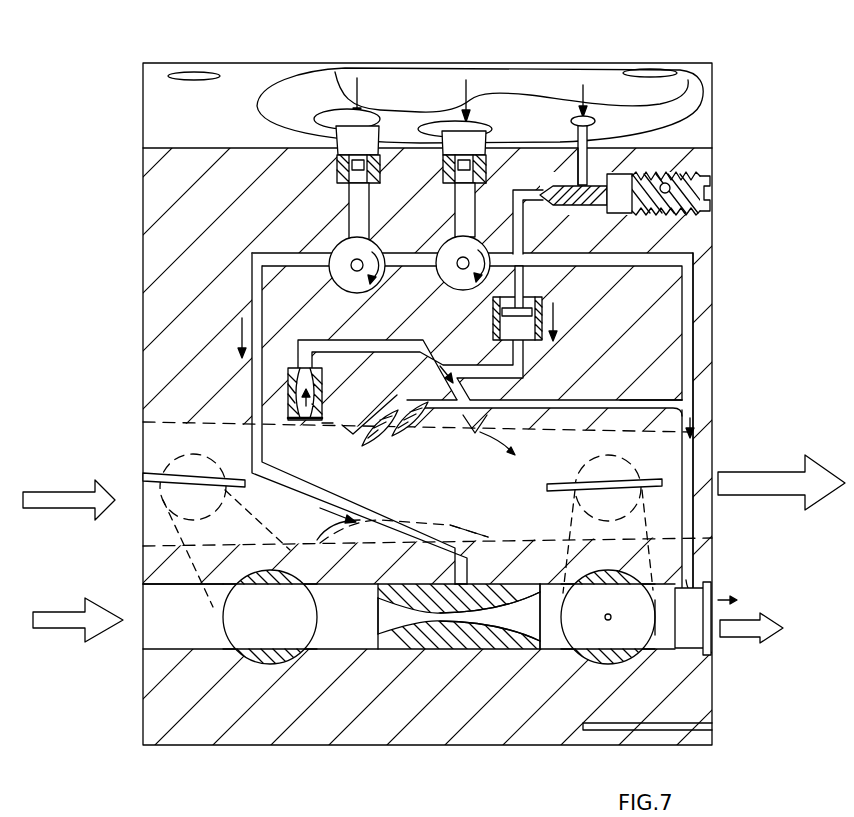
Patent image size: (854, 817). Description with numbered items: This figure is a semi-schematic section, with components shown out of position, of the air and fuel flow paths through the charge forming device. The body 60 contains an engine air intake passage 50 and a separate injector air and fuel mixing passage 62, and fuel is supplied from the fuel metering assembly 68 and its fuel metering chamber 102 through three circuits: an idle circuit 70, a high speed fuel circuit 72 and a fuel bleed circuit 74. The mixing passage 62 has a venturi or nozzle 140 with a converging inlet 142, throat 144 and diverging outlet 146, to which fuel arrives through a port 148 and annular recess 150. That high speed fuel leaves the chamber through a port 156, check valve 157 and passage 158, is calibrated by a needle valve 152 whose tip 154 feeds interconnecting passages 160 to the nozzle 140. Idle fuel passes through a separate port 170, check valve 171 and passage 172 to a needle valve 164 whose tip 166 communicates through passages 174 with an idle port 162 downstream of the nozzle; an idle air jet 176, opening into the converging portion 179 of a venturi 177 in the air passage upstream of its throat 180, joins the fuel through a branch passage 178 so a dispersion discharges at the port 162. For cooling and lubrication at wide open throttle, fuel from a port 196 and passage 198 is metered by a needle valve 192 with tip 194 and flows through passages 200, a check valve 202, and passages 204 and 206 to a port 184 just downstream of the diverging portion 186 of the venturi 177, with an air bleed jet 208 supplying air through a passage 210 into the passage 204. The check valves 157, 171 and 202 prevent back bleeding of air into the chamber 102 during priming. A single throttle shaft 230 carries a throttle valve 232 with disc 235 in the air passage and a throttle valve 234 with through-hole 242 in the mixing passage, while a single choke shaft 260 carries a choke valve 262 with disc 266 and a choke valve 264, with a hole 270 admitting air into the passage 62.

The engine air intake passage 50 is at (150, 448).
The body 60 is at (143, 178).
The injector air and fuel mixing passage 62 is at (138, 586).
The fuel metering assembly 68 is at (325, 62).
The idle circuit 70 is at (705, 312).
The high speed fuel circuit 72 is at (245, 298).
The fuel bleed circuit 74 is at (412, 330).
The fuel metering chamber 102 is at (664, 104).
The venturi or nozzle 140 is at (390, 657).
The converging inlet 142 is at (356, 634).
The throat 144 is at (447, 650).
The diverging outlet 146 is at (532, 642).
The port 148 is at (480, 597).
The annular recess 150 is at (432, 582).
The needle valve 152 is at (337, 247).
The tip 154 is at (350, 270).
The port 156 is at (357, 128).
The check valve 157 is at (337, 166).
The passage 158 is at (348, 192).
The interconnecting passages 160 is at (250, 272).
The idle port 162 is at (712, 590).
The needle valve 164 is at (470, 268).
The tip 166 is at (443, 250).
The port 170 is at (464, 133).
The check valve 171 is at (381, 168).
The passage 172 is at (455, 203).
The passages 174 is at (695, 285).
The idle air jet 176 is at (372, 450).
The venturi 177 is at (395, 462).
The branch passage 178 is at (620, 398).
The converging portion 179 is at (337, 546).
The throat 180 is at (383, 517).
The port 184 is at (482, 433).
The diverging portion 186 is at (452, 527).
The needle valve 192 is at (678, 173).
The tip 194 is at (541, 192).
The port 196 is at (588, 116).
The passage 198 is at (592, 160).
The passages 200 is at (523, 224).
The check valve 202 is at (545, 308).
The passages 204 is at (532, 357).
The passages 206 is at (523, 400).
The air bleed jet 208 is at (307, 425).
The passage 210 is at (370, 322).
The throttle shaft 230 is at (595, 662).
The throttle valve 232 is at (640, 469).
The throttle valve 234 is at (660, 640).
The disc 235 is at (662, 486).
The through-hole 242 is at (627, 625).
The choke shaft 260 is at (256, 670).
The choke valve 262 is at (160, 458).
The choke valve 264 is at (203, 634).
The disc 266 is at (143, 477).
The hole 270 is at (644, 86).